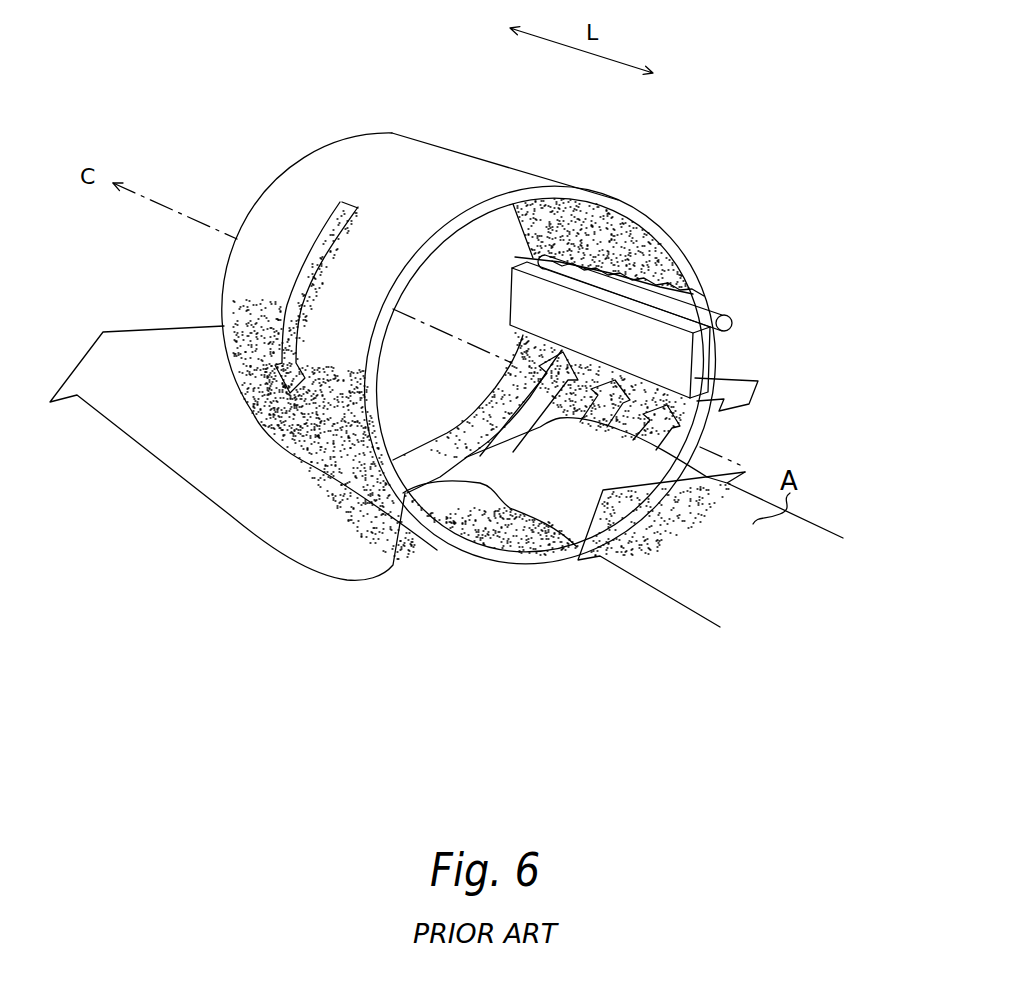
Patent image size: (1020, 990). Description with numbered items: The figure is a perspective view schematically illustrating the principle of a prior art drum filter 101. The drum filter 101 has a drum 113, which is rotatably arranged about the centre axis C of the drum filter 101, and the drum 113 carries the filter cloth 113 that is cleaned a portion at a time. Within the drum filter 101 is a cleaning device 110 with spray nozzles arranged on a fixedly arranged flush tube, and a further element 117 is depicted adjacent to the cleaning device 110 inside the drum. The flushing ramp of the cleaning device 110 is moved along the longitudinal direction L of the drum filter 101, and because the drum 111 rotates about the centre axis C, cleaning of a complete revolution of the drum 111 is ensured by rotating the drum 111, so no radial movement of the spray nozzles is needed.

The drum filter 101 is at (505, 359).
The drum 113 is at (460, 153).
The drum 111 is at (680, 253).
The cleaning device 110 is at (720, 316).
The nozzle block 117 is at (709, 363).